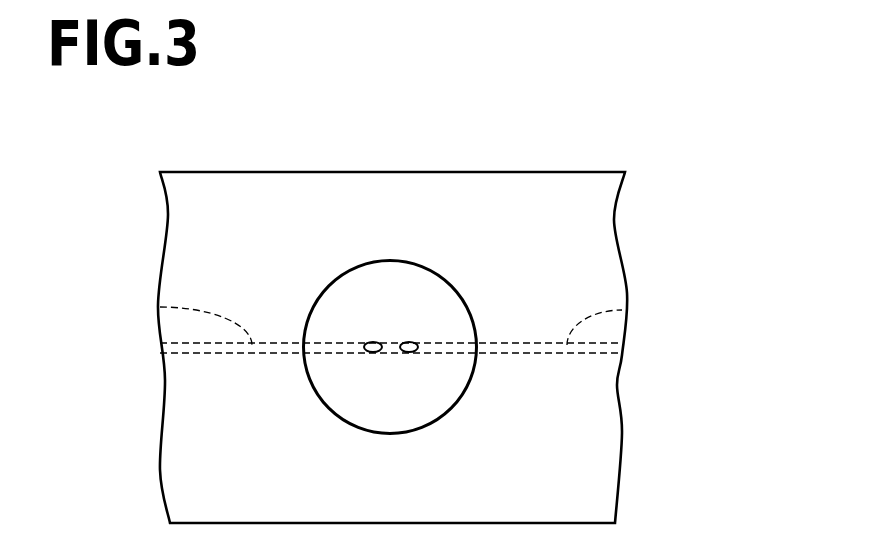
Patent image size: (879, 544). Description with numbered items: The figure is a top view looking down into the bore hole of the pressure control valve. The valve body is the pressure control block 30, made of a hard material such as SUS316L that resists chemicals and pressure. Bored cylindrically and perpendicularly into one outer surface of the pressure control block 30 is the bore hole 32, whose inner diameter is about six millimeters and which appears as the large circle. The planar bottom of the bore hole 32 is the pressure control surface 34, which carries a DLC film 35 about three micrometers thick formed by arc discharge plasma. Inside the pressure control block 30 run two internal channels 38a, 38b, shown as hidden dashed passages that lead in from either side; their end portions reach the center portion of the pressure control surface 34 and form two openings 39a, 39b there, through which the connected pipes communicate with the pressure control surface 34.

The pressure control block 30 is at (535, 193).
The bore hole 32 is at (427, 260).
The pressure control surface 34 is at (391, 234).
The DLC film 35 is at (373, 305).
The internal channel 38a is at (622, 310).
The internal channel 38b is at (160, 307).
The opening 39a is at (418, 345).
The opening 39b is at (364, 345).